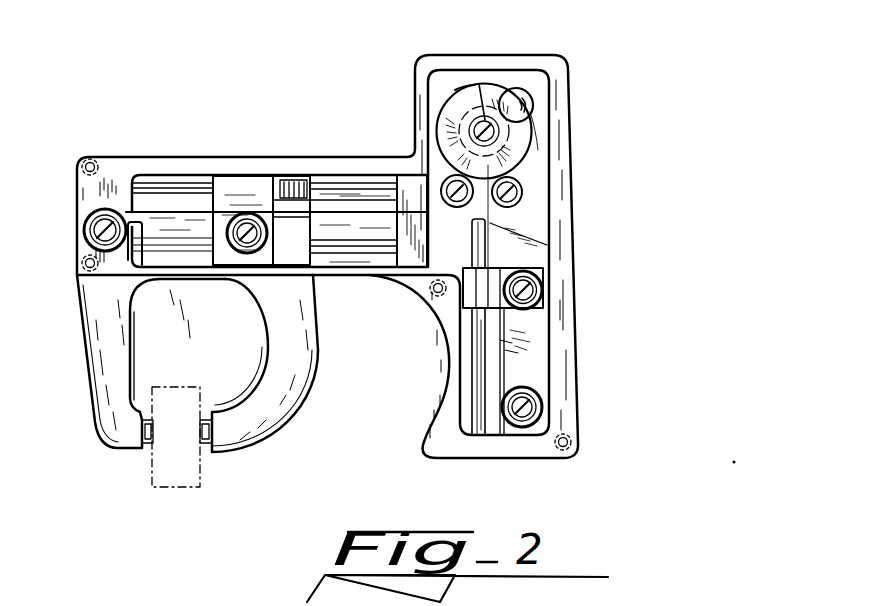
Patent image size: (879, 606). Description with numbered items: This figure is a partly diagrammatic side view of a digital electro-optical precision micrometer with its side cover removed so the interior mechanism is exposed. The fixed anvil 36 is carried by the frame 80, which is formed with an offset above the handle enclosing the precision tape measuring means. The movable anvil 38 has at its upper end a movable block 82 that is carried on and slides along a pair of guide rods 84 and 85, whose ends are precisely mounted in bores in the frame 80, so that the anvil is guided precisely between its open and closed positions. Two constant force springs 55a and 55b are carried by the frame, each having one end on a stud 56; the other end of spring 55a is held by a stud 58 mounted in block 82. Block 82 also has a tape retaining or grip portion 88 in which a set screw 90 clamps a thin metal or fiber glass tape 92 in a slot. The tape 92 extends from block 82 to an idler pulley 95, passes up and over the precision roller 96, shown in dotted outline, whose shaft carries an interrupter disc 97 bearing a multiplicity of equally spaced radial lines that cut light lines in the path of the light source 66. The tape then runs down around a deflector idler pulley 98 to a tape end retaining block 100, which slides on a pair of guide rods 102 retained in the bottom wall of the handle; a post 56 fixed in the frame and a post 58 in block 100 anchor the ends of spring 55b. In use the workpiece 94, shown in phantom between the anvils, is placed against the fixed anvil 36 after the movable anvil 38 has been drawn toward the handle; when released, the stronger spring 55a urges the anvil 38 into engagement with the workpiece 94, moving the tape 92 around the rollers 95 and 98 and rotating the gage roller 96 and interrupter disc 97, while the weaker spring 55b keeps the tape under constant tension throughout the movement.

The fixed anvil 36 is at (97, 393).
The movable anvil 38 is at (287, 412).
The constant force spring 55a is at (148, 213).
The constant force spring 55b is at (503, 364).
The stud 56 is at (86, 232).
The stud 58 is at (244, 252).
The light source 66 is at (521, 90).
The frame 80 is at (195, 162).
The movable block 82 is at (238, 177).
The guide rod 84 is at (337, 185).
The guide rod 85 is at (363, 247).
The tape retaining portion 88 is at (313, 200).
The set screw 90 is at (290, 192).
The tape 92 is at (370, 210).
The workpiece 94 is at (195, 487).
The idler pulley 95 is at (432, 78).
The precision roller 96 is at (496, 48).
The interrupter disc 97 is at (455, 90).
The deflector idler pulley 98 is at (522, 190).
The tape end retaining block 100 is at (545, 272).
The guide rod 102 is at (474, 349).